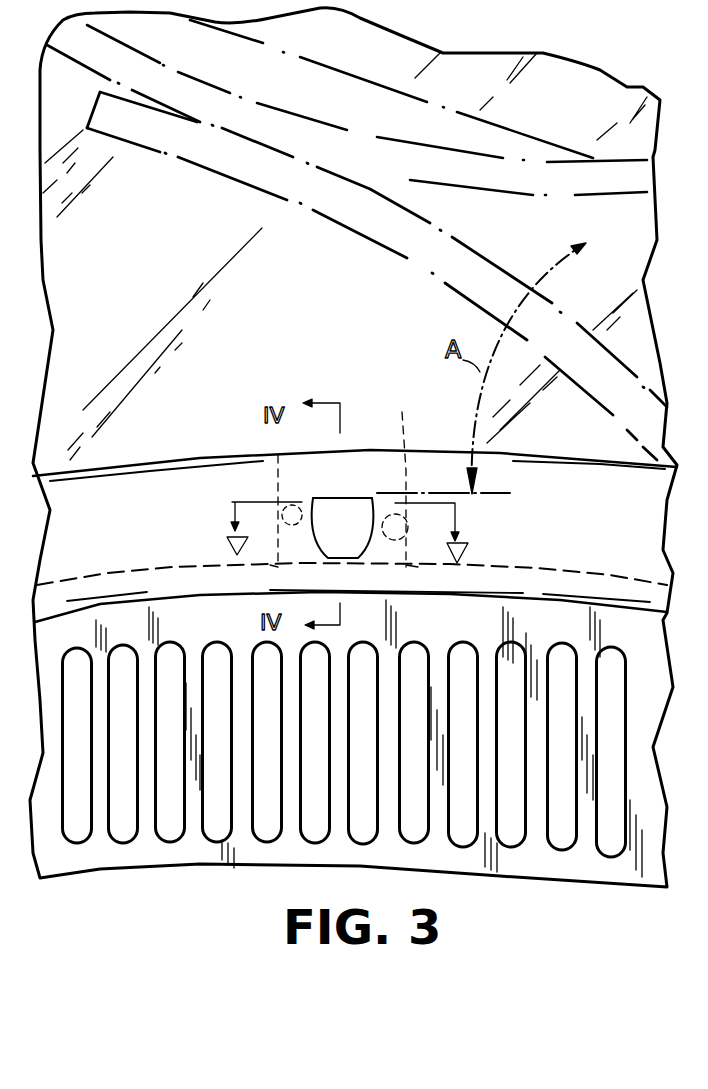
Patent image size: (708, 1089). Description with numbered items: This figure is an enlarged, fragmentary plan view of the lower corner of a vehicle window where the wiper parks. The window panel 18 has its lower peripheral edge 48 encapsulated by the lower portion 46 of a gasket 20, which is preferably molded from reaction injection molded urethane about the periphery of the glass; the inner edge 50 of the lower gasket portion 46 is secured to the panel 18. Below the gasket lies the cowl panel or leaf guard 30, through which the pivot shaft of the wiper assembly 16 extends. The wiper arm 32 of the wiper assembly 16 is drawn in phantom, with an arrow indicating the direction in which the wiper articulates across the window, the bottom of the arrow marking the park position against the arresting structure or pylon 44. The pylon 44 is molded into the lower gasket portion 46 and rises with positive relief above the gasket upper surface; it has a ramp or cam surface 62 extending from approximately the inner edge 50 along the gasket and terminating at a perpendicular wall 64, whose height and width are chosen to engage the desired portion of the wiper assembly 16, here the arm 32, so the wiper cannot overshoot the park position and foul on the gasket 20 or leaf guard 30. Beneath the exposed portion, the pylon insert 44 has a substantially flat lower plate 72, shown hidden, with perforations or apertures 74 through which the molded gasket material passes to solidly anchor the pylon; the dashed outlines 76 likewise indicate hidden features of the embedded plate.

The wiper assembly 16 is at (271, 211).
The window panel 18 is at (562, 114).
The gasket 20 is at (135, 456).
The cowl panel or leaf guard 30 is at (218, 634).
The wiper arm 32 is at (405, 258).
The arresting structure or pylon 44 is at (413, 478).
The lower portion of gasket 46 is at (137, 552).
The lower peripheral edge 48 is at (548, 558).
The inner edge 50 is at (178, 460).
The ramp or cam surface 62 is at (356, 468).
The wall 64 is at (332, 496).
The lower plate 72 is at (402, 477).
The perforations or apertures 74 is at (408, 528).
The hidden fastener hole 76 is at (278, 473).